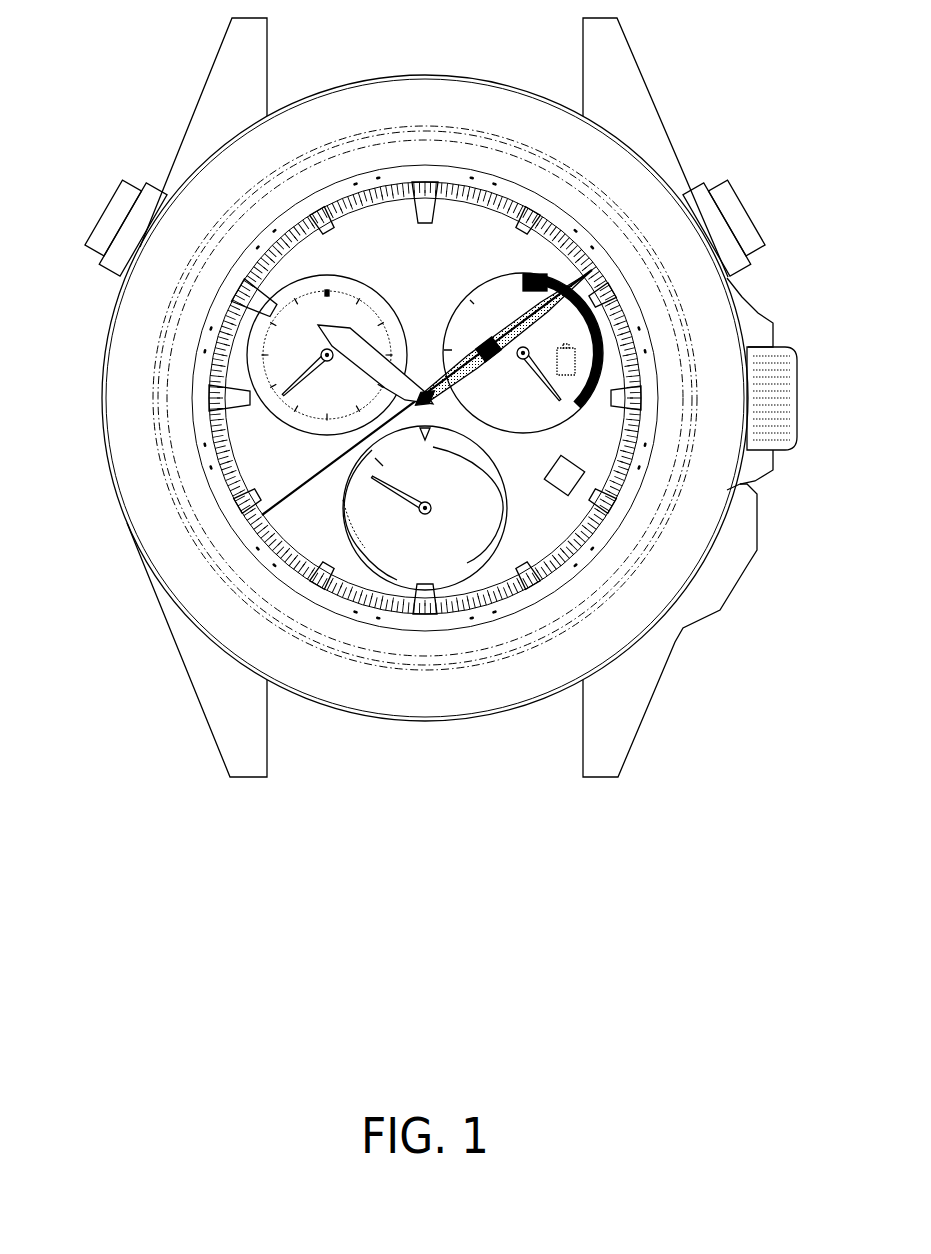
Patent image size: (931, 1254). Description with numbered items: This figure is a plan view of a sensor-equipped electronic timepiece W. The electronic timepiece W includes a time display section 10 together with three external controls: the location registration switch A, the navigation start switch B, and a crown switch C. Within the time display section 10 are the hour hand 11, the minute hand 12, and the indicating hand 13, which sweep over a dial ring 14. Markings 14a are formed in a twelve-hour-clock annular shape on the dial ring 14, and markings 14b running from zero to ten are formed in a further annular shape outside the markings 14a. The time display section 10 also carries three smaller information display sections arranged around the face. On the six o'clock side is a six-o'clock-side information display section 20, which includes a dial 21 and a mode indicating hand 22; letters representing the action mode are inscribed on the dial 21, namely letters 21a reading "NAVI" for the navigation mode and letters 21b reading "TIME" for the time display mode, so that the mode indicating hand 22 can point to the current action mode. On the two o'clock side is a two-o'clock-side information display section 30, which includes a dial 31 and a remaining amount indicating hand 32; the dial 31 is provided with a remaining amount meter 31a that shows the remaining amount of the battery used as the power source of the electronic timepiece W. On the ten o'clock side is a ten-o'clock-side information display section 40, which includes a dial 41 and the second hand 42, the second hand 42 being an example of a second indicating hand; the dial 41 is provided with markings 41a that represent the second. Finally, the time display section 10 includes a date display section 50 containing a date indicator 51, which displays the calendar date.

The electronic timepiece W is at (710, 97).
The location registration switch A is at (98, 197).
The navigation start switch B is at (746, 207).
The crown switch C is at (797, 420).
The time display section 10 is at (473, 230).
The hour hand 11 is at (375, 360).
The minute hand 12 is at (540, 312).
The indicating hand 13 is at (322, 479).
The dial ring 14 is at (238, 558).
The markings 14a is at (243, 502).
The markings 14b is at (220, 515).
The 6-o'clock-side information display section 20 is at (400, 585).
The dial 21 is at (452, 572).
The letters "NAVI" 21a is at (345, 505).
The letters "TIME" 21b is at (485, 570).
The mode indicating hand 22 is at (398, 512).
The 2-o'clock-side information display section 30 is at (603, 360).
The dial 31 is at (545, 417).
The remaining amount meter 31a is at (603, 320).
The remaining amount indicating hand 32 is at (570, 400).
The 10-o'clock-side information display section 40 is at (250, 382).
The dial 41 is at (250, 309).
The markings 41a is at (318, 290).
The second hand 42 is at (285, 380).
The date display section 50 is at (587, 470).
The date indicator 51 is at (570, 496).